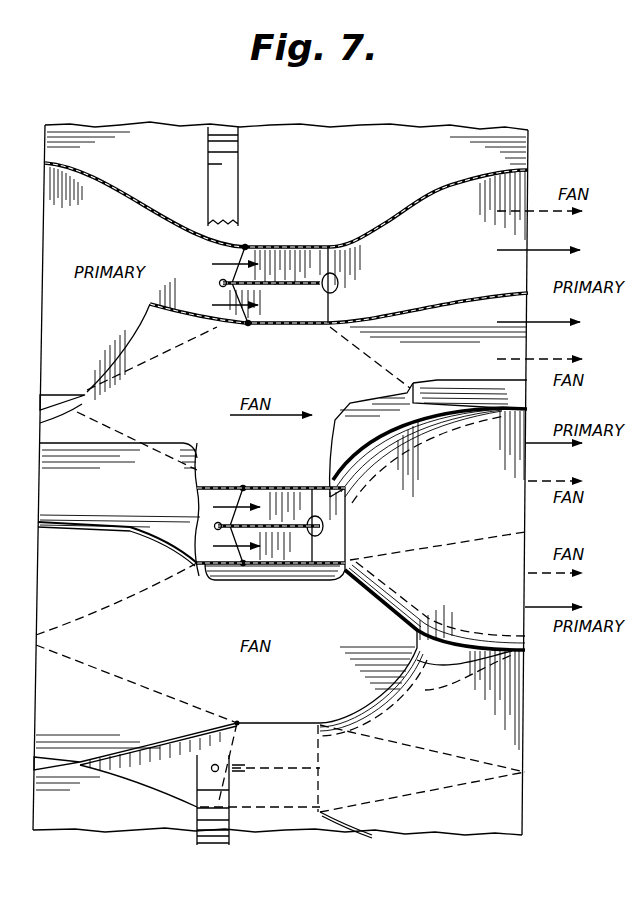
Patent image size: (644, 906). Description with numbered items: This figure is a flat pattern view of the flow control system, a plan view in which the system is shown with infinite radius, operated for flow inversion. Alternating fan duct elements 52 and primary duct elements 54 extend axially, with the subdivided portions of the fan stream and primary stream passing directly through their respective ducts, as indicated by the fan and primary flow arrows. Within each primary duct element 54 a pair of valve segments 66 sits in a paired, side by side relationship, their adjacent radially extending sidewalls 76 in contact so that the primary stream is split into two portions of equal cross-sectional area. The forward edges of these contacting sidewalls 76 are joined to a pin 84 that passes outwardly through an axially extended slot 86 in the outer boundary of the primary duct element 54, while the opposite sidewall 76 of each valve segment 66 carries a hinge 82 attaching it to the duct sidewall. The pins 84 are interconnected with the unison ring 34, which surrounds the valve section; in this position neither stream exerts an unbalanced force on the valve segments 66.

The unison ring 34 is at (210, 143).
The fan duct element 52 is at (366, 364).
The primary duct element 54 is at (432, 236).
The valve segment 66 is at (306, 262).
The radially extending sidewall 76 is at (290, 246).
The hinge 82 is at (246, 246).
The pin 84 is at (214, 526).
The axially extended slot 86 is at (233, 768).